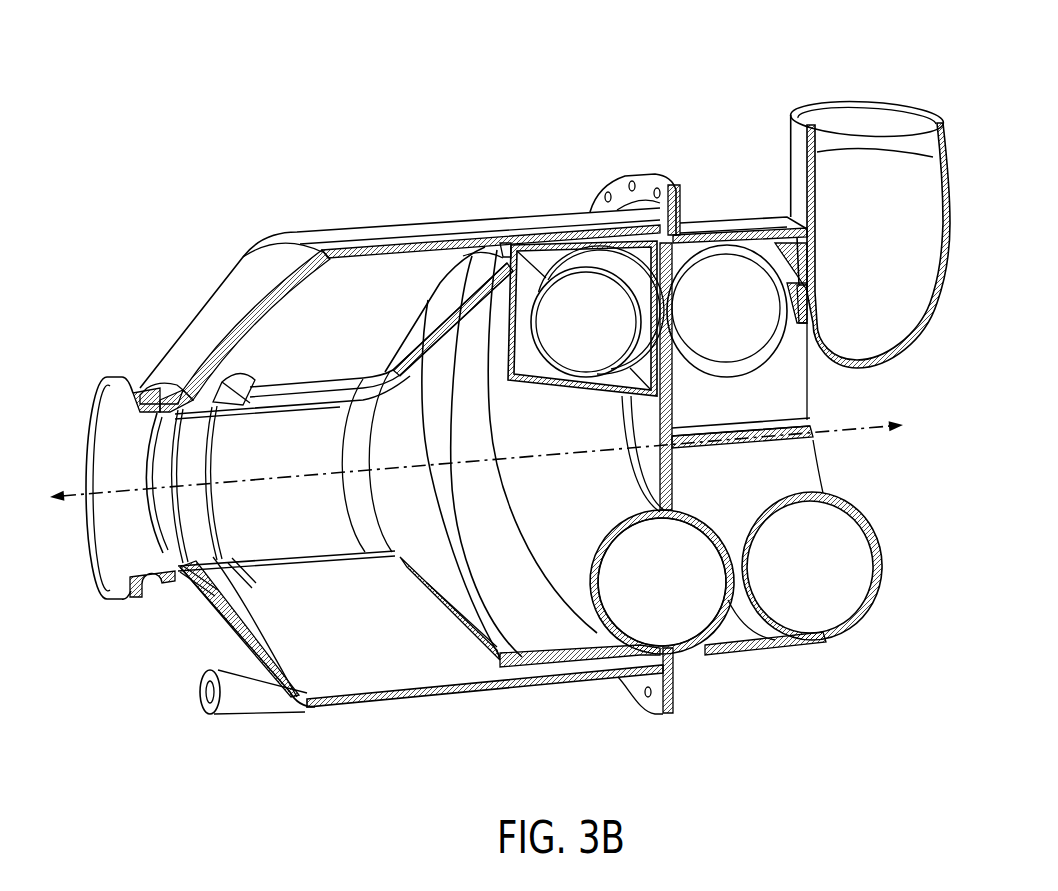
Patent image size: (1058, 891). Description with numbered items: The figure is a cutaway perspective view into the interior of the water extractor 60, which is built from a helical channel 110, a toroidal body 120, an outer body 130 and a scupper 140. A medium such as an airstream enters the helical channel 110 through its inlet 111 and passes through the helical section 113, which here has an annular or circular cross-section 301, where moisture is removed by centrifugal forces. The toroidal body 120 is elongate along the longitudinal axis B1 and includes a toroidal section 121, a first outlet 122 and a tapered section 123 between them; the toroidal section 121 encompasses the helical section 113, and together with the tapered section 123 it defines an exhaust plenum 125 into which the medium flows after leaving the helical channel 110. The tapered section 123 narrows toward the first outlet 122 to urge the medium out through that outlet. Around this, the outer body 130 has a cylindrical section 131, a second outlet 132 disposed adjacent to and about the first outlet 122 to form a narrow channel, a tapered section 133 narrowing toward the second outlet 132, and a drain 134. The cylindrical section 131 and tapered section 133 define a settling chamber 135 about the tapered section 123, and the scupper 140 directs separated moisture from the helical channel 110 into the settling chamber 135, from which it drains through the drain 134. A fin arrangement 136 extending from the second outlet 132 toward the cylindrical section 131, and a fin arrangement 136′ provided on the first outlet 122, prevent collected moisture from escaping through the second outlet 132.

The water extractor 60 is at (255, 198).
The helical channel 110 is at (873, 612).
The inlet 111 is at (855, 167).
The helical section 113 is at (680, 620).
The toroidal body 120 is at (722, 218).
The toroidal section 121 is at (607, 660).
The first outlet 122 is at (188, 548).
The tapered section 123 is at (443, 300).
The exhaust plenum 125 is at (556, 645).
The outer body 130 is at (452, 210).
The cylindrical section 131 is at (607, 218).
The second outlet 132 is at (103, 385).
The tapered section 133 is at (240, 290).
The drain 134 is at (200, 693).
The settling chamber 135 is at (352, 645).
The fin arrangement 136 is at (195, 393).
The fin arrangement 136′ is at (232, 387).
The scupper 140 is at (553, 243).
The annular or circular cross-section 301 is at (651, 598).
The longitudinal axis B1 is at (857, 437).